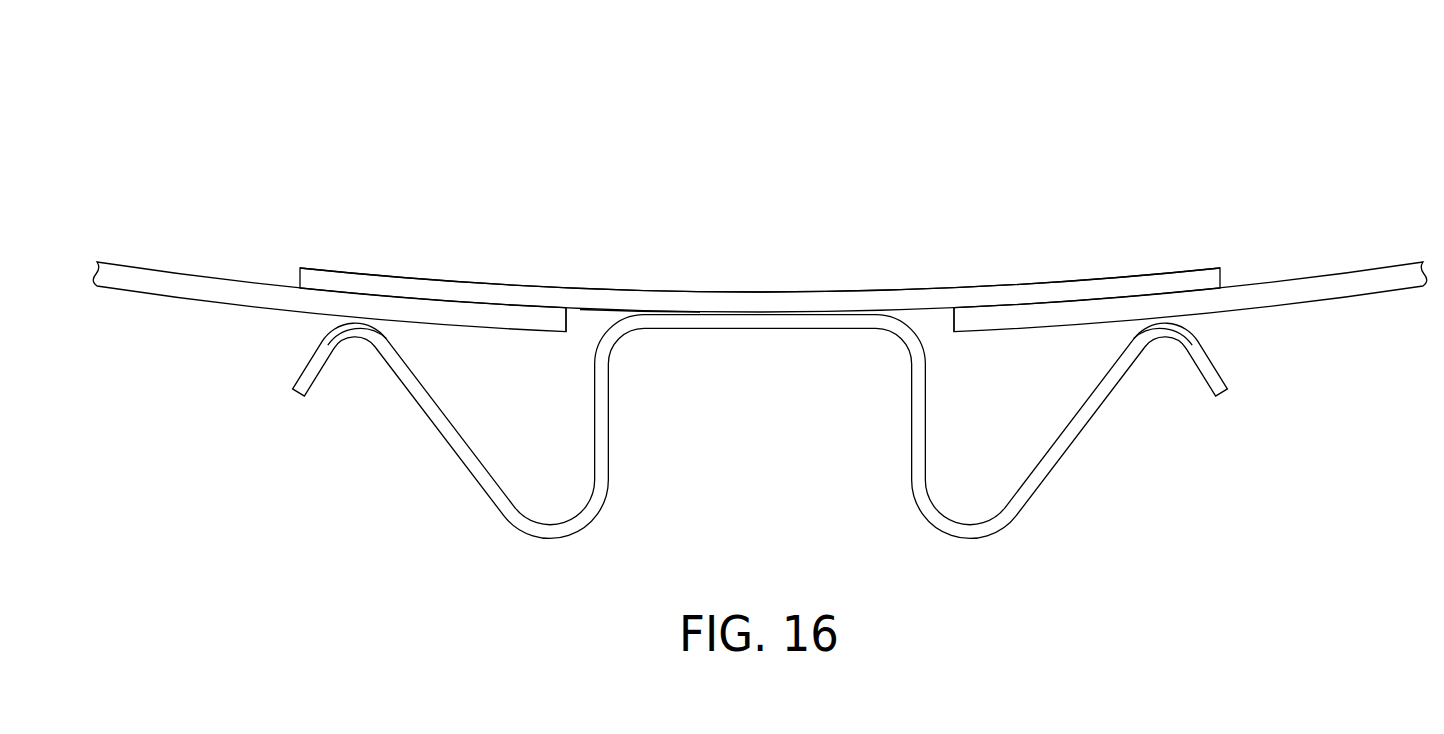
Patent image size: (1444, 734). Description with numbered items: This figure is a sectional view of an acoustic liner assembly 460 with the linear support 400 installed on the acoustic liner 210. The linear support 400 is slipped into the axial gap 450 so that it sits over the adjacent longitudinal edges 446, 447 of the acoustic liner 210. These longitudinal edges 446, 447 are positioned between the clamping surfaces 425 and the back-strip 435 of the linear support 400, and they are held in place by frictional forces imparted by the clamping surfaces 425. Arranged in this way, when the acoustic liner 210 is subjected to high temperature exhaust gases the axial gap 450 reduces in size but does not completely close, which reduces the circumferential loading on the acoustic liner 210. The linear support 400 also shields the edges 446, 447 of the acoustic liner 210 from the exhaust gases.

The acoustic liner 210 is at (181, 302).
The linear support 400 is at (613, 427).
The clamping surfaces 425 is at (366, 340).
The back-strip 435 is at (737, 302).
The longitudinal edge 446 is at (952, 327).
The longitudinal edge 447 is at (570, 325).
The axial gap 450 is at (592, 332).
The acoustic liner assembly 460 is at (665, 197).